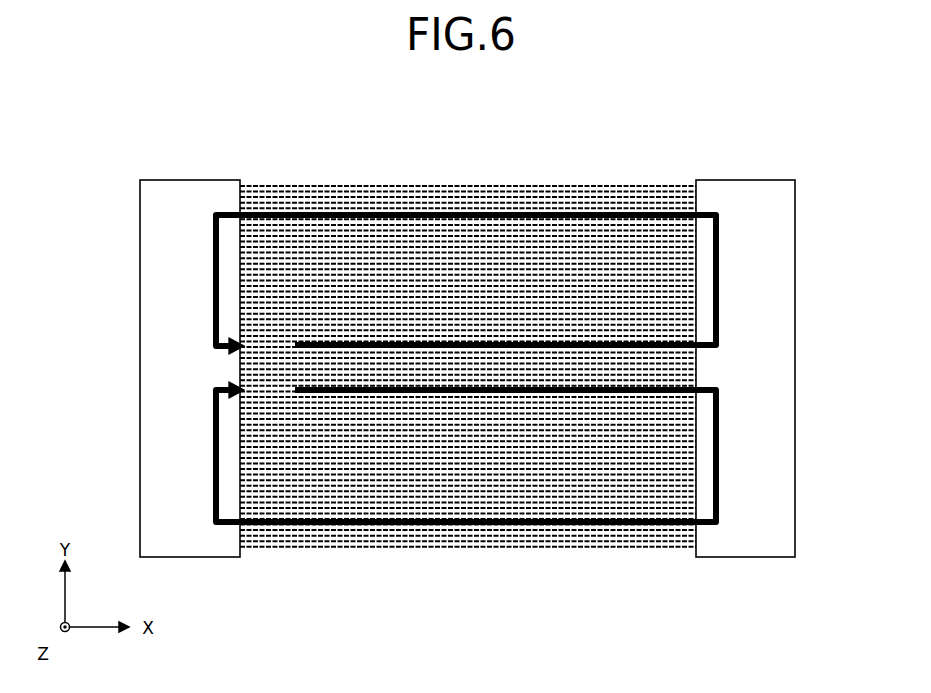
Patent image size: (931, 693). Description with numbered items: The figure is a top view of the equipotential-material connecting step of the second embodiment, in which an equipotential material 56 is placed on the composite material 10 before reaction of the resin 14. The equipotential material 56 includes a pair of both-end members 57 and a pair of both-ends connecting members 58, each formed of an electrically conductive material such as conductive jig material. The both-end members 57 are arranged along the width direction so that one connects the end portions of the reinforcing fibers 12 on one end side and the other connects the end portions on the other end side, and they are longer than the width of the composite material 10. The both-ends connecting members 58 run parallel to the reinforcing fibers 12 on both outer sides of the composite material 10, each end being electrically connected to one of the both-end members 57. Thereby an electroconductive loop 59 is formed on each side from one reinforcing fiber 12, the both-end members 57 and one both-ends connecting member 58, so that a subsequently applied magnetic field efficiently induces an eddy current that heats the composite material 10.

The composite material 10 is at (689, 405).
The reinforcing fibers 12 is at (688, 345).
The resin 14 is at (688, 364).
The equipotential material 56 is at (757, 140).
The both-end members 57 is at (196, 171).
The both-ends connecting members 58 is at (355, 178).
The electroconductive loop 59 is at (514, 178).